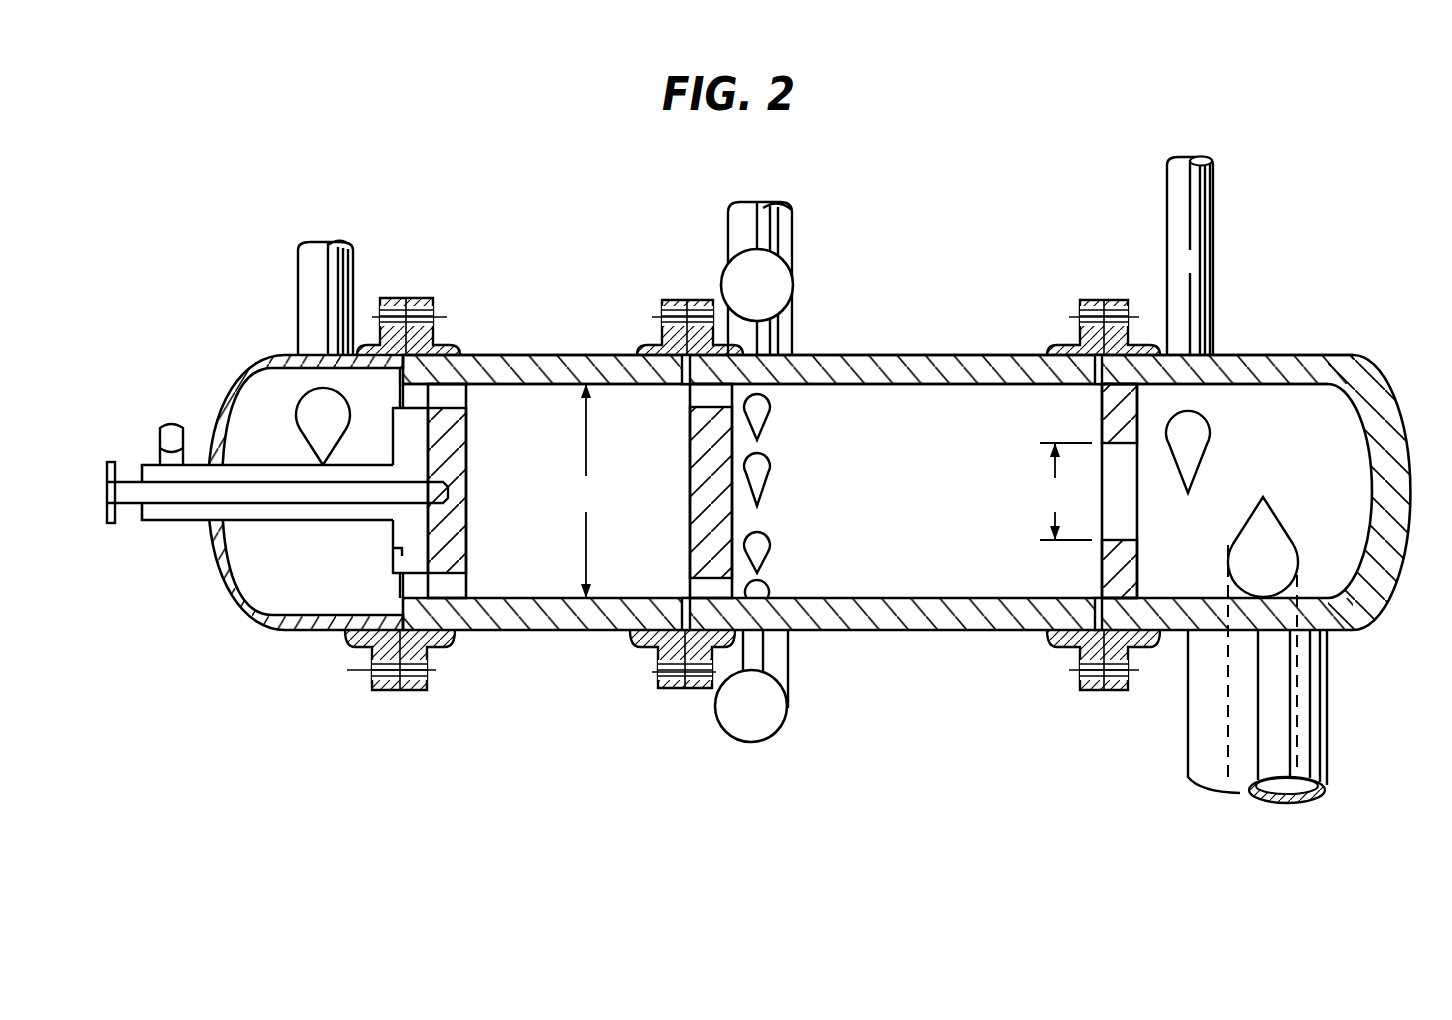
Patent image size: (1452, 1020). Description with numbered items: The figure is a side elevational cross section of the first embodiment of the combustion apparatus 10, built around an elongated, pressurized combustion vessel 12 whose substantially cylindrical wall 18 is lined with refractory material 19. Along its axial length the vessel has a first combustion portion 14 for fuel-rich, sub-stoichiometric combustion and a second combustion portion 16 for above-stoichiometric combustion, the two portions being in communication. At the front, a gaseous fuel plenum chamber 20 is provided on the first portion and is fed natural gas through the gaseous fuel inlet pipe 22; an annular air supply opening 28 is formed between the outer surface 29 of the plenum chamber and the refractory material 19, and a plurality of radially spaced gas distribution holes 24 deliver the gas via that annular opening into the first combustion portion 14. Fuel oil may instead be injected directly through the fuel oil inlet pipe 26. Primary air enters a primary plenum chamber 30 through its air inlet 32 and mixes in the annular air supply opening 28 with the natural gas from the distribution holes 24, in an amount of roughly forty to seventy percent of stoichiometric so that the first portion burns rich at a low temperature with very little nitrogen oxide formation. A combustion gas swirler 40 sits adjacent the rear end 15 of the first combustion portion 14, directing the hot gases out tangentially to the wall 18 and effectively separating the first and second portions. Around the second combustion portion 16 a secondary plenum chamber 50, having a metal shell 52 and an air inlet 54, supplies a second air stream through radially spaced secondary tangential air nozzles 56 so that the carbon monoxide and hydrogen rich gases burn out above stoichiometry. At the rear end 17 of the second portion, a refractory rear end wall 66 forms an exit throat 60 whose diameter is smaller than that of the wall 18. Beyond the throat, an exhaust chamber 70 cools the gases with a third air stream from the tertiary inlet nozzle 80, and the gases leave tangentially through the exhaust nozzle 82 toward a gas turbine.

The combustion apparatus 10 is at (1039, 228).
The combustion vessel 12 is at (925, 632).
The first combustion portion 14 is at (560, 555).
The rear end of first combustion portion 15 is at (680, 463).
The second combustion portion 16 is at (920, 535).
The rear end of second combustion portion 17 is at (1090, 432).
The cylindrical wall 18 is at (560, 378).
The refractory material 19 is at (497, 372).
The gaseous fuel plenum chamber 20 is at (397, 550).
The gaseous fuel inlet pipe 22 is at (152, 507).
The gas distribution holes 24 is at (443, 540).
The fuel oil inlet pipe 26 is at (120, 482).
The annular air supply opening 28 is at (410, 378).
The outer surface of gaseous fuel plenum chamber 29 is at (400, 605).
The primary plenum chamber 30 is at (265, 555).
The air inlet 32 is at (328, 241).
The combustion gas swirler 40 is at (707, 512).
The secondary plenum chamber 50 is at (758, 703).
The metal shell 52 is at (735, 660).
The air inlet 54 is at (751, 202).
The secondary tangential air nozzles 56 is at (762, 548).
The exit throat 60 is at (1135, 565).
The rear end wall 66 is at (1100, 570).
The exhaust chamber 70 is at (1210, 397).
The tertiary inlet nozzle 80 is at (1198, 220).
The exhaust nozzle 82 is at (1270, 553).